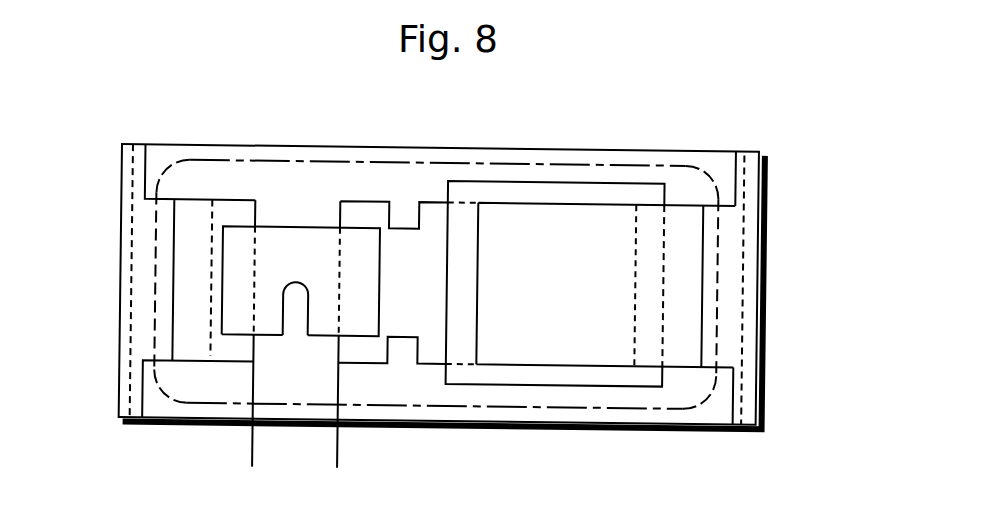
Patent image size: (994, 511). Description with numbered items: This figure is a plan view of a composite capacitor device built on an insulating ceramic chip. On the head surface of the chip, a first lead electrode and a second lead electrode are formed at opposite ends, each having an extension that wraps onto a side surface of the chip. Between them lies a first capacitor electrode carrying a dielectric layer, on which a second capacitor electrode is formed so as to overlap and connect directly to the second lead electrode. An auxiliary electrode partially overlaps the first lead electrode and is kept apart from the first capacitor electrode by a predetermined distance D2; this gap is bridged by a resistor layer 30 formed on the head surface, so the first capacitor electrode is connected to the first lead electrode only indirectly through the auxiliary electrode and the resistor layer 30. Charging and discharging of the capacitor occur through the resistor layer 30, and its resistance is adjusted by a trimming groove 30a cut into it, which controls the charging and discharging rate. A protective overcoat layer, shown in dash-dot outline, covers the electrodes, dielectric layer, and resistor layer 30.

The resistor layer 30 is at (302, 257).
The trimming groove 30a is at (295, 312).
The predetermined distance D2 is at (338, 448).